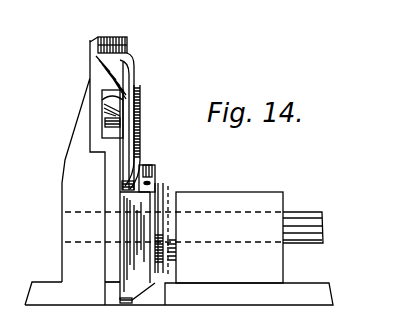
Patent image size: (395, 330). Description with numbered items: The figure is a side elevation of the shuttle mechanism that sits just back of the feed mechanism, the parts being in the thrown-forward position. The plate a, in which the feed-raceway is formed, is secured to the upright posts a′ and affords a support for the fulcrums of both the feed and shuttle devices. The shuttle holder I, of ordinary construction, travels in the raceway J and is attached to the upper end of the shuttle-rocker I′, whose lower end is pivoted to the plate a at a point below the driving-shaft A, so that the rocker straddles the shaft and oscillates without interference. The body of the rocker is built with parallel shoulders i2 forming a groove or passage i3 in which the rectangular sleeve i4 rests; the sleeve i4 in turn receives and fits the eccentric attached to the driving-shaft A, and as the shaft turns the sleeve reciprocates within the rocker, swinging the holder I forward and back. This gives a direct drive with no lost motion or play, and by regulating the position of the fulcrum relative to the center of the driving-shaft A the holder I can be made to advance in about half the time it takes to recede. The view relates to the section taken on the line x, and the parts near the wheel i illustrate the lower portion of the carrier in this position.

The pawl carrier block F is at (108, 36).
The shuttle holder I is at (137, 72).
The shuttle-rocker I′ is at (127, 134).
The raceway J is at (112, 115).
The plate a is at (112, 222).
The upright posts a′ is at (83, 172).
The feed wheel i is at (137, 247).
The parallel shoulders i2 is at (154, 163).
The groove or passage i3 is at (160, 172).
The rectangular sleeve i4 is at (172, 184).
The section line x is at (165, 230).
The driving-shaft A is at (255, 237).